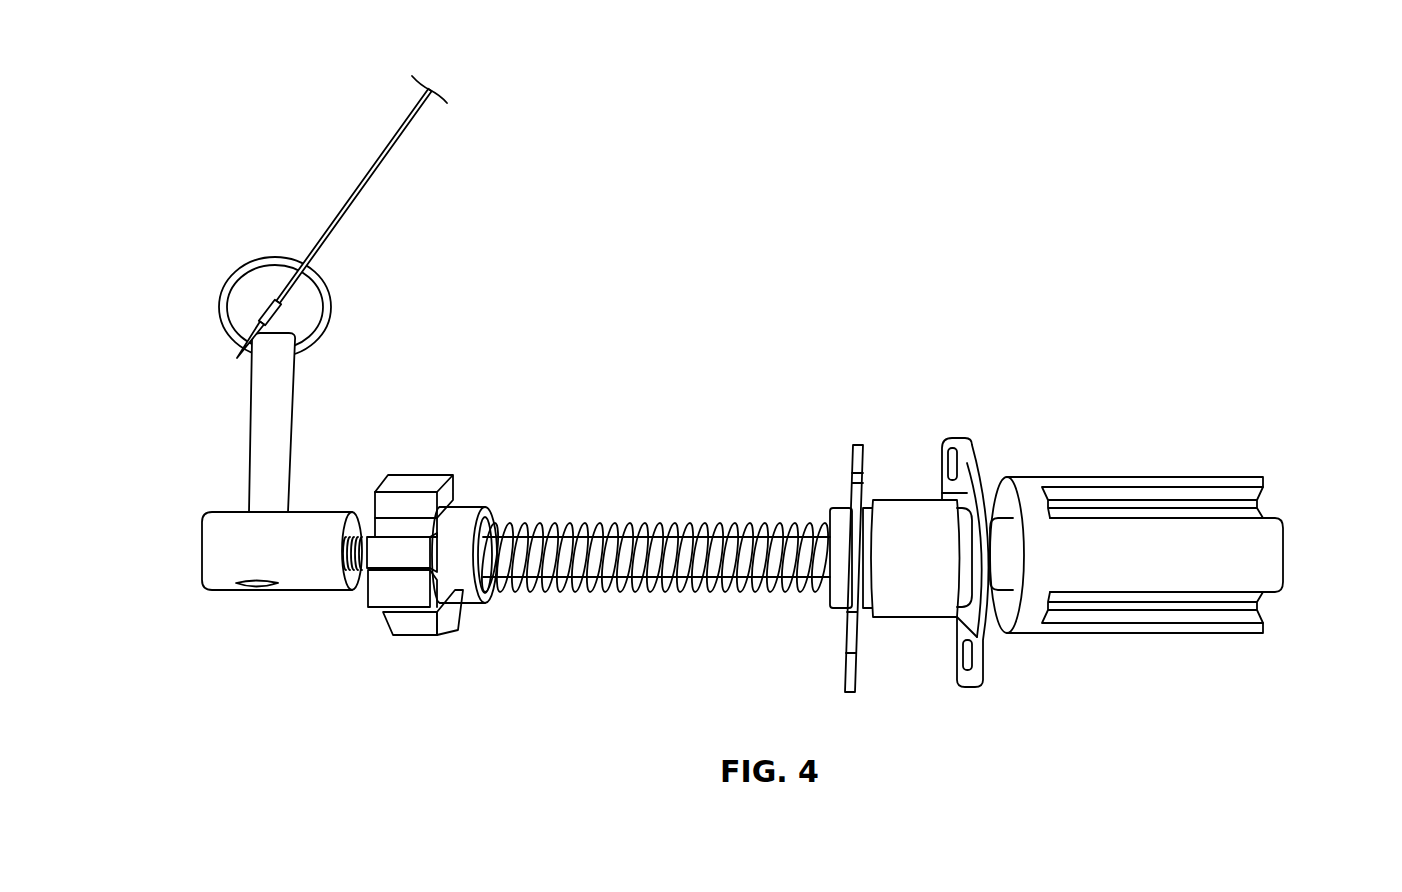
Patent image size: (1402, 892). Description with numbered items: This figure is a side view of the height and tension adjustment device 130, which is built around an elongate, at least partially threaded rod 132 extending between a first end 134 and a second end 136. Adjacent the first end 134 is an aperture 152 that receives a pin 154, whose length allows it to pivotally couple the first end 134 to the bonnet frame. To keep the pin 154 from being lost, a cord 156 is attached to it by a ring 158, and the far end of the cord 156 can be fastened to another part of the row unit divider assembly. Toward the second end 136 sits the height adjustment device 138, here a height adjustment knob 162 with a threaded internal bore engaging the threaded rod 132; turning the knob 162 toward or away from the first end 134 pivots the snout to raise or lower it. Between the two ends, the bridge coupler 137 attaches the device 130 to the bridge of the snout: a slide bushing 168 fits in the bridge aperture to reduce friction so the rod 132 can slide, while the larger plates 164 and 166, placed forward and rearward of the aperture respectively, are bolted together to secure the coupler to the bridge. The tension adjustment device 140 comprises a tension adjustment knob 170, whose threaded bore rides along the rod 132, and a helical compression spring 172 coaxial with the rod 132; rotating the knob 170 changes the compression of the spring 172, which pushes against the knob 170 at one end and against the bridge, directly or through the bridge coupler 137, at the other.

The height and tension adjustment device 130 is at (150, 196).
The rod 132 is at (716, 541).
The first end 134 is at (238, 570).
The second end 136 is at (1183, 539).
The bridge coupler 137 is at (1005, 353).
The height adjustment device 138 is at (1205, 353).
The tension adjustment device 140 is at (411, 448).
The aperture 152 is at (262, 586).
The pin 154 is at (258, 445).
The cord 156 is at (365, 178).
The ring 158 is at (247, 262).
The height adjustment knob 162 is at (1137, 478).
The plate 164 is at (968, 440).
The plate 166 is at (860, 443).
The slide bushing 168 is at (897, 603).
The tension adjustment knob 170 is at (447, 527).
The spring 172 is at (586, 526).